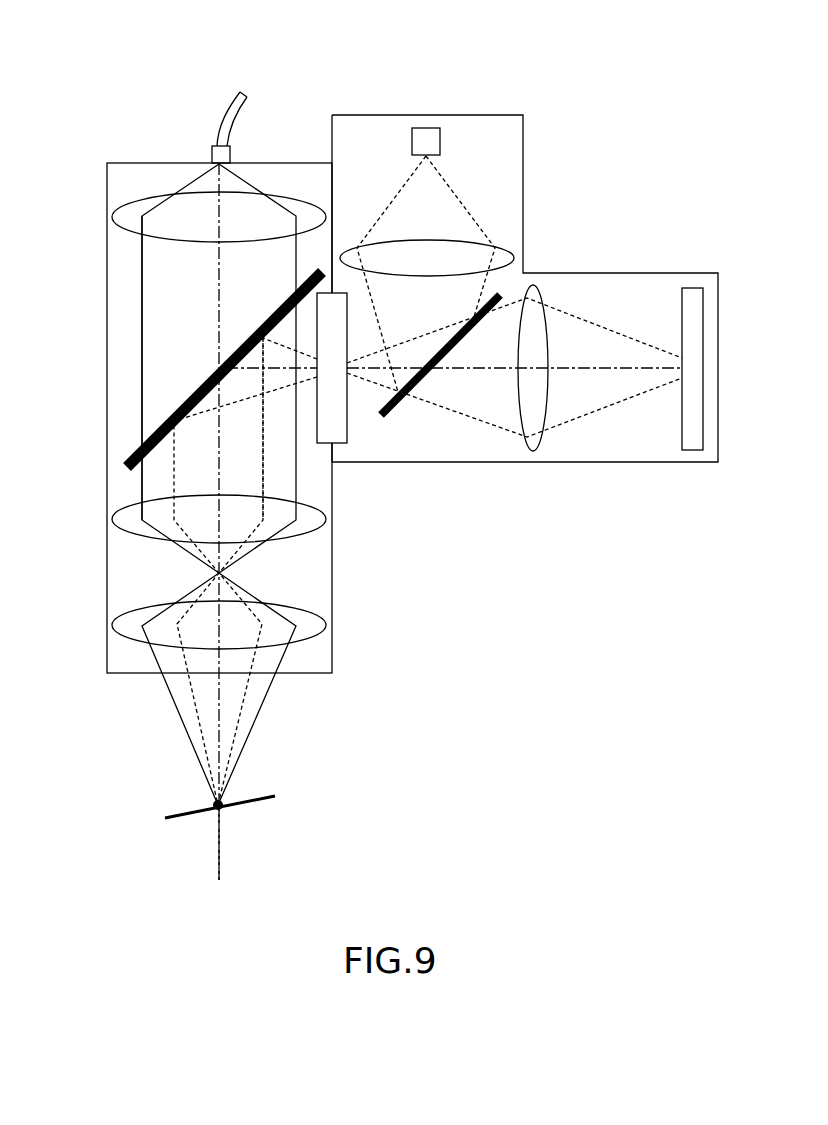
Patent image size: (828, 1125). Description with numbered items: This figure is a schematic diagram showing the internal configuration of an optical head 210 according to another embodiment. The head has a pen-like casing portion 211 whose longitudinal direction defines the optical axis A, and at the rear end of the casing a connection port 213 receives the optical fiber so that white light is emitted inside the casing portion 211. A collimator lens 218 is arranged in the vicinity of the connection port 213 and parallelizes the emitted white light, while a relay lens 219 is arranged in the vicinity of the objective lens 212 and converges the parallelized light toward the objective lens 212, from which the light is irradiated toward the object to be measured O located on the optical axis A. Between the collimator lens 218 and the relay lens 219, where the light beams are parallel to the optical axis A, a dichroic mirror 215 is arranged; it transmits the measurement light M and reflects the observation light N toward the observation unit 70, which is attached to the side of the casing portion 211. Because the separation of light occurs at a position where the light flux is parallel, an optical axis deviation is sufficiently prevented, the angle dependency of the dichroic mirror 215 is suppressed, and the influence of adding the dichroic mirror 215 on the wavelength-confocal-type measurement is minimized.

The optical head 210 is at (287, 90).
The observation unit 70 is at (456, 100).
The casing portion 211 is at (107, 305).
The connection port 213 is at (212, 152).
The collimator lens 218 is at (120, 207).
The dichroic mirror 215 is at (128, 455).
The relay lens 219 is at (327, 517).
The objective lens 212 is at (327, 622).
The measurement light M is at (141, 362).
The observation light N is at (263, 480).
The object to be measured O is at (275, 796).
The optical axis A is at (220, 871).